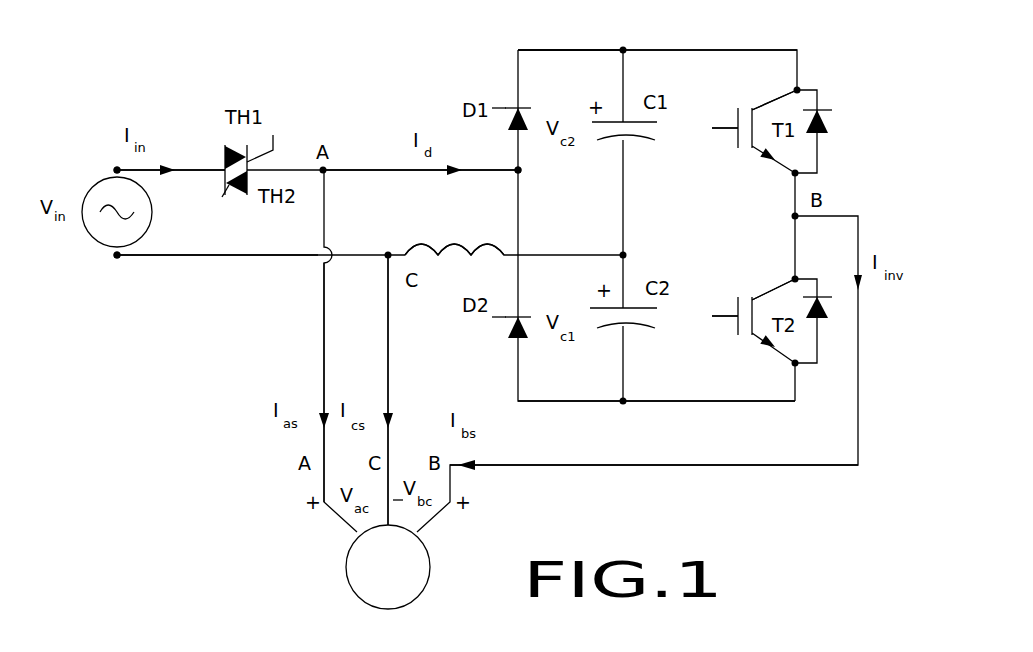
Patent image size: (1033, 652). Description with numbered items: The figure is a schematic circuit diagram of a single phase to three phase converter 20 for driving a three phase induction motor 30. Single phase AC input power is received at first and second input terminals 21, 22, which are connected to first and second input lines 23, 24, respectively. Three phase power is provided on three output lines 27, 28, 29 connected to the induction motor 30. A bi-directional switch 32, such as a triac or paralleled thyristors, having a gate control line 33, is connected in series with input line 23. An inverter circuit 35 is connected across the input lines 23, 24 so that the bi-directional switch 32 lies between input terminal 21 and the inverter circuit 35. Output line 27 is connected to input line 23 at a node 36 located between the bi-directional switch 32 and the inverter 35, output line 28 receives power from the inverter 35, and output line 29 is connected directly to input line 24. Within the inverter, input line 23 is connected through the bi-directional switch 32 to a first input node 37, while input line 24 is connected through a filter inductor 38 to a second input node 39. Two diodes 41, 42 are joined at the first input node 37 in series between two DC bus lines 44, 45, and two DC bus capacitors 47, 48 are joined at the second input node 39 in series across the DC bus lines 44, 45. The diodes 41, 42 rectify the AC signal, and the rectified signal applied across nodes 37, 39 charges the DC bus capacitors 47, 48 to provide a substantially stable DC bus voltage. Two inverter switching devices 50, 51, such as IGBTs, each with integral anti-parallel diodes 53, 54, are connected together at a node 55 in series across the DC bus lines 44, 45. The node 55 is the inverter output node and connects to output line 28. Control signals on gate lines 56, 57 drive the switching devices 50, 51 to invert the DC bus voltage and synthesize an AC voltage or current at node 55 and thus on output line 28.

The single phase to three phase converter 20 is at (443, 62).
The first input terminal 21 is at (117, 170).
The second input terminal 22 is at (117, 256).
The first input line 23 is at (193, 170).
The second input line 24 is at (210, 256).
The first output line 27 is at (323, 353).
The second output line 28 is at (600, 467).
The third output line 29 is at (386, 368).
The induction motor 30 is at (430, 567).
The bi-directional switch 32 is at (222, 197).
The gate control line 33 is at (274, 147).
The inverter circuit 35 is at (573, 40).
The node 36 is at (326, 168).
The first input node 37 is at (518, 170).
The filter inductor 38 is at (455, 238).
The second input node 39 is at (623, 255).
The diode 41 is at (522, 125).
The diode 42 is at (527, 335).
The DC bus line 44 is at (655, 48).
The DC bus line 45 is at (668, 403).
The DC bus capacitor 47 is at (637, 138).
The DC bus capacitor 48 is at (637, 328).
The inverter switching device 50 is at (770, 103).
The inverter switching device 51 is at (778, 283).
The anti-parallel diode 53 is at (832, 122).
The anti-parallel diode 54 is at (823, 317).
The node 55 is at (793, 216).
The gate line 56 is at (722, 128).
The gate line 57 is at (725, 313).